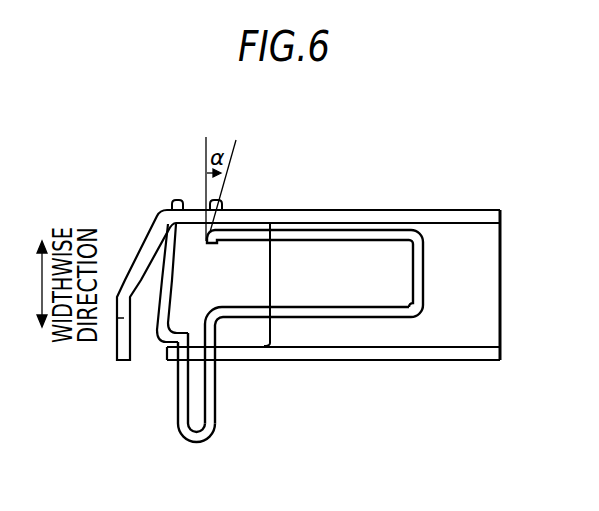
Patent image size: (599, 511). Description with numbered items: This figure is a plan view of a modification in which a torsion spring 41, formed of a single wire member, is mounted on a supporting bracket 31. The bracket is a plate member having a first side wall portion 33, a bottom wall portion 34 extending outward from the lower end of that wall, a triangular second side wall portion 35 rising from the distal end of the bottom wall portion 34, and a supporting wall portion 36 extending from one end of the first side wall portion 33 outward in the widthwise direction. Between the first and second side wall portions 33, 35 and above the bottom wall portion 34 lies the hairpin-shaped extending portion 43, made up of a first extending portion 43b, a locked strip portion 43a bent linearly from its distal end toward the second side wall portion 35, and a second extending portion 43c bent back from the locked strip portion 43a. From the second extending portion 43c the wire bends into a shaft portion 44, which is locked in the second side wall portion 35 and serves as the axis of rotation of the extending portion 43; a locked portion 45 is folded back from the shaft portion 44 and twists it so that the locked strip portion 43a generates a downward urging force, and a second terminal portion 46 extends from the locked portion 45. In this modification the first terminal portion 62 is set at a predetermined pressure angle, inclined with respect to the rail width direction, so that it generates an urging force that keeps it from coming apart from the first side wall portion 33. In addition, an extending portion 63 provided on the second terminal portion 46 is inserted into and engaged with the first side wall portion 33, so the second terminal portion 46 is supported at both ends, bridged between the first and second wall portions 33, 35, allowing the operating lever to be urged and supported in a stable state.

The supporting bracket 31 is at (434, 210).
The first side wall portion 33 is at (474, 224).
The bottom wall portion 34 is at (499, 313).
The second side wall portion 35 is at (459, 362).
The supporting wall portion 36 is at (150, 232).
The torsion spring 41 is at (192, 443).
The extending portion 43 is at (368, 318).
The locked strip portion 43a is at (424, 273).
The first extending portion 43b is at (340, 230).
The second extending portion 43c is at (303, 318).
The shaft portion 44 is at (215, 412).
The locked portion 45 is at (178, 412).
The second terminal portion 46 is at (157, 307).
The first terminal portion 62 is at (230, 218).
The extending portion 63 is at (162, 212).